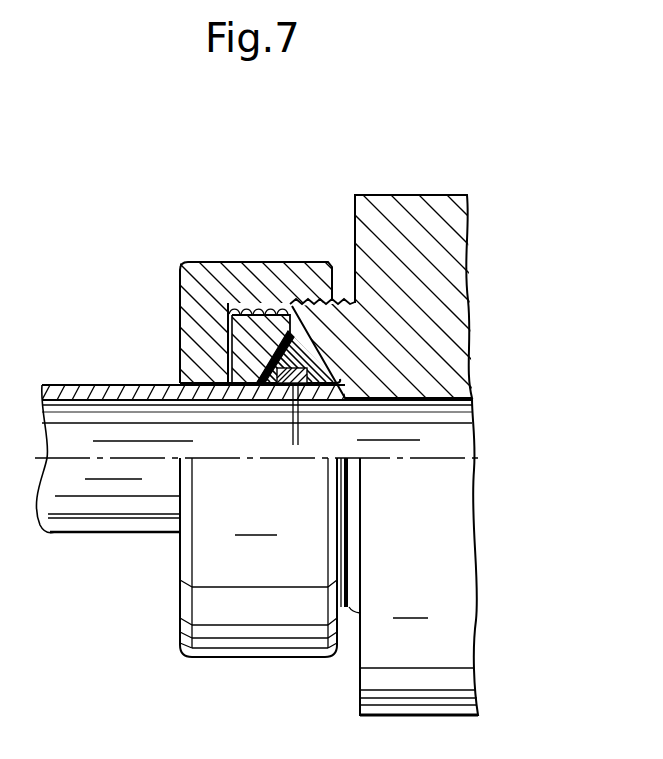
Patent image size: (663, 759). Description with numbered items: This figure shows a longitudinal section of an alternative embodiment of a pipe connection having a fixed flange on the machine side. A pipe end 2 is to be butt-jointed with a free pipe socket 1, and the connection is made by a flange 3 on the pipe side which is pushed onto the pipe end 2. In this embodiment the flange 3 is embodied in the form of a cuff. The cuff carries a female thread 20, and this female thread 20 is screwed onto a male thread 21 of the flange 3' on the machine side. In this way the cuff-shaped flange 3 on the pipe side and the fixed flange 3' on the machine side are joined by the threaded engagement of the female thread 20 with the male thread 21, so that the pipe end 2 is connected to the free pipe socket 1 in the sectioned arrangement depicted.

The free pipe socket 1 is at (340, 402).
The pipe end 2 is at (105, 517).
The flange 3 is at (249, 459).
The flange on the machine side 3' is at (366, 455).
The female thread 20 is at (255, 298).
The male thread 21 is at (341, 297).